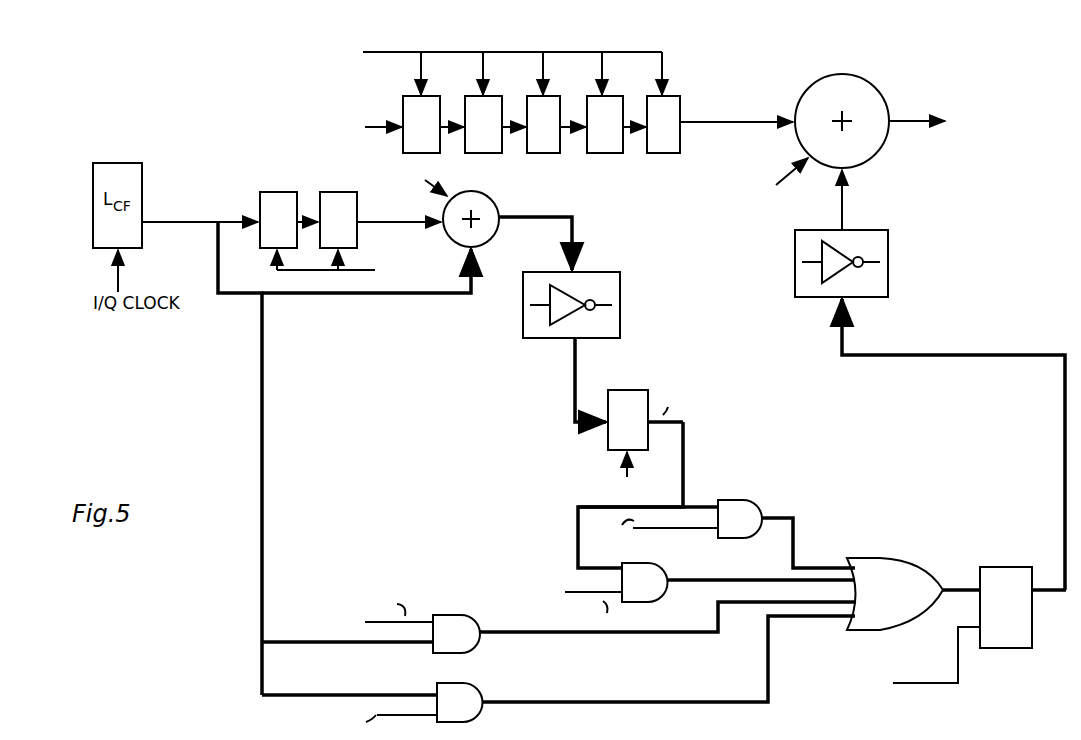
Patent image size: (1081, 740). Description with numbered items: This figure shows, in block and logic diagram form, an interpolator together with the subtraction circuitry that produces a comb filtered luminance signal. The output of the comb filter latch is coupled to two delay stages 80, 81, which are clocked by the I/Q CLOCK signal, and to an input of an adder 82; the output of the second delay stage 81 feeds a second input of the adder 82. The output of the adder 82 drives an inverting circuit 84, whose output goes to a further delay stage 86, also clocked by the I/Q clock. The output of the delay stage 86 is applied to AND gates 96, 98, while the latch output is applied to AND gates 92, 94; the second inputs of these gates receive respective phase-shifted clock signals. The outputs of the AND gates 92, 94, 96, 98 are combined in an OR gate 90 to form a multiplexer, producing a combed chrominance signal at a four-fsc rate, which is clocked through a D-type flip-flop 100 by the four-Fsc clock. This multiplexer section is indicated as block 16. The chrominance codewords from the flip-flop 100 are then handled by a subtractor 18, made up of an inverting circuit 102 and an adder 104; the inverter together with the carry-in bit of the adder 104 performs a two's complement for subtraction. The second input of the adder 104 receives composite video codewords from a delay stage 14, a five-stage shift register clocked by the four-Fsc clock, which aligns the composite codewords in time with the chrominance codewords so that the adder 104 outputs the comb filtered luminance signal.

The delay stage 14 is at (563, 41).
The I/Q timing logic section 16 is at (424, 390).
The subtractor 18 is at (886, 208).
The delay stage 80 is at (276, 192).
The delay stage 81 is at (340, 192).
The adder 82 is at (496, 194).
The inverting circuit 84 is at (622, 293).
The delay stage 86 is at (640, 390).
The OR gate 90 is at (884, 560).
The AND gate 92 is at (487, 667).
The AND gate 94 is at (470, 615).
The AND gate 96 is at (741, 500).
The AND gate 98 is at (667, 580).
The D-type flip-flop 100 is at (1033, 645).
The inverting circuit 102 is at (890, 250).
The adder 104 is at (882, 96).